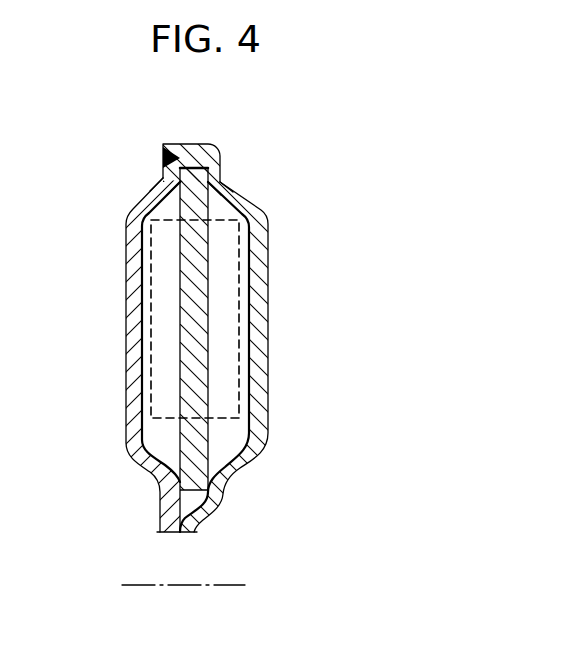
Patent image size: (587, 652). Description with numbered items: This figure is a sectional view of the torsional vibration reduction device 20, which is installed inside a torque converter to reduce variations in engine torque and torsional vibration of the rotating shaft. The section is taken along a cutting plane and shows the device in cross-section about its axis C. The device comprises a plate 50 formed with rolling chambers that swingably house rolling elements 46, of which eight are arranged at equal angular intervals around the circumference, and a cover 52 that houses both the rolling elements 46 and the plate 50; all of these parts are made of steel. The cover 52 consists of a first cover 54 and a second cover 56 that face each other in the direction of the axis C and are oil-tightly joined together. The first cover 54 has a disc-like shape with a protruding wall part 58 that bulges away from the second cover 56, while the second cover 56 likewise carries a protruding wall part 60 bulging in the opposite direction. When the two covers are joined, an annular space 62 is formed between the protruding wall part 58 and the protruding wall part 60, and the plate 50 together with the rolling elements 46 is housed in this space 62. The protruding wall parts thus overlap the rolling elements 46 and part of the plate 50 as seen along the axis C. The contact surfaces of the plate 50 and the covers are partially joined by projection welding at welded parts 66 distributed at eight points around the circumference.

The torsional vibration reduction device 20 is at (293, 326).
The rolling elements 46 is at (155, 378).
The plate 50 is at (195, 362).
The cover 52 is at (272, 179).
The first cover 54 is at (98, 277).
The second cover 56 is at (288, 337).
The protruding wall part 58 is at (133, 343).
The protruding wall part 60 is at (258, 285).
The annular space 62 is at (150, 426).
The welded parts 66 is at (177, 179).
The axis C is at (198, 586).